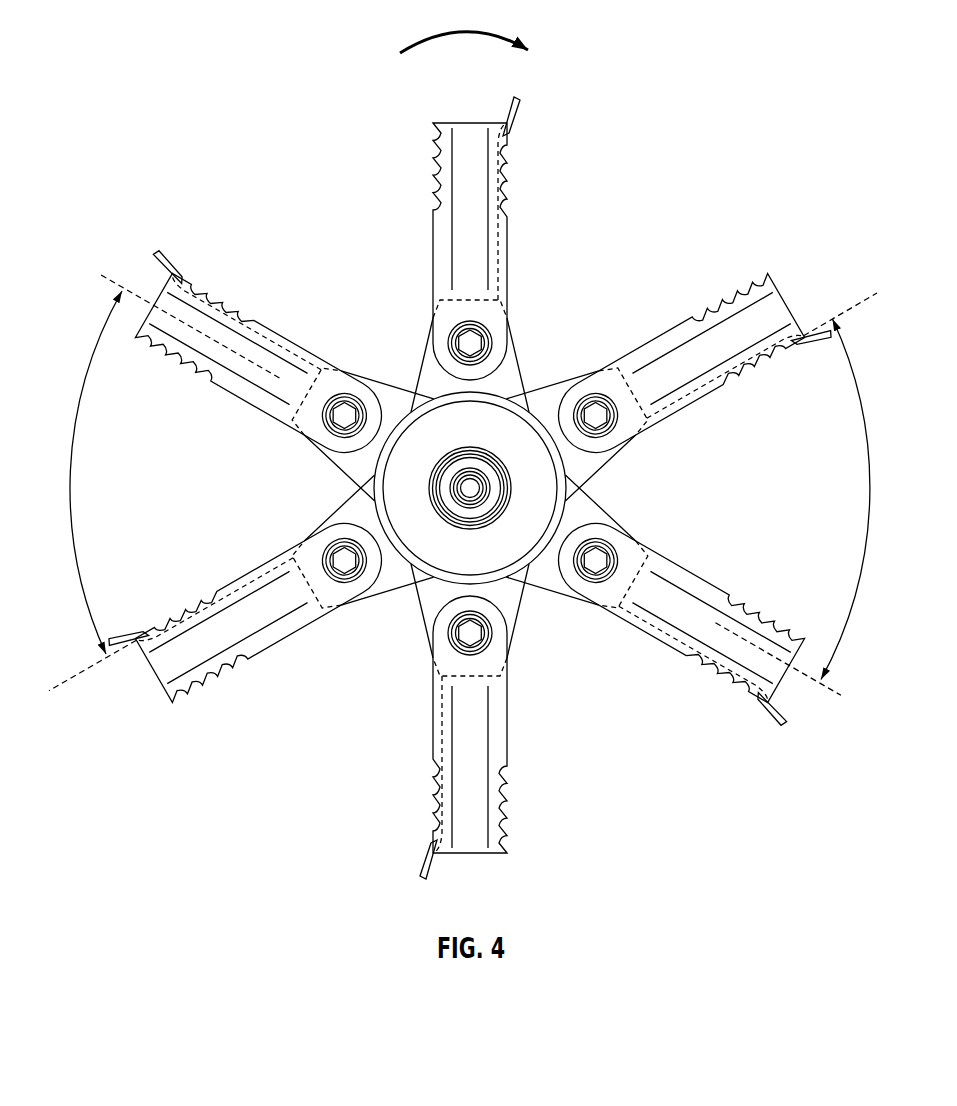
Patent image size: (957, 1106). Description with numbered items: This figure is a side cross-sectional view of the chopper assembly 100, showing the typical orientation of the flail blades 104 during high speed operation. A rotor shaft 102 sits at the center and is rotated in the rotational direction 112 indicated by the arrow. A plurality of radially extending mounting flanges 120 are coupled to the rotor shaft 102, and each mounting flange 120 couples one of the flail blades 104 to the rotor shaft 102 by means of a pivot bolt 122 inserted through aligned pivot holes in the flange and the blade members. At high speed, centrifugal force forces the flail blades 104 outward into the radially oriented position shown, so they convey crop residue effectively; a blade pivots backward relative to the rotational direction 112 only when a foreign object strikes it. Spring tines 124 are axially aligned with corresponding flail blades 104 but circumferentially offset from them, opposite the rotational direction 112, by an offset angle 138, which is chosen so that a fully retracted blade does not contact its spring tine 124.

The chopper assembly 100 is at (186, 121).
The rotor shaft 102 is at (530, 486).
The flail blade 104 is at (447, 240).
The rotational direction 112 is at (428, 37).
The mounting flange 120 is at (428, 377).
The pivot bolt 122 is at (490, 334).
The spring tine 124 is at (526, 118).
The offset angle 138 is at (74, 440).